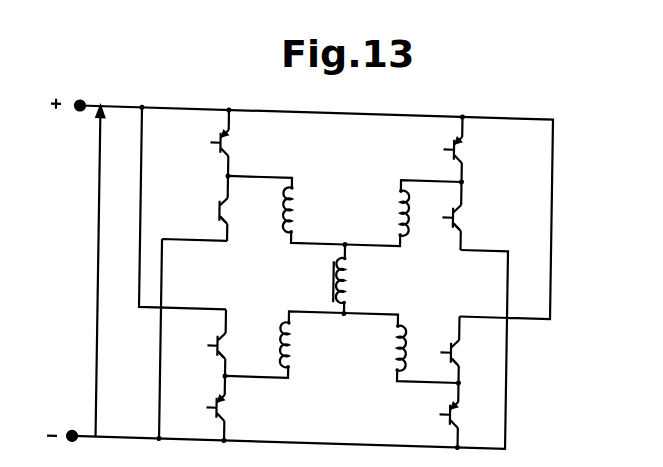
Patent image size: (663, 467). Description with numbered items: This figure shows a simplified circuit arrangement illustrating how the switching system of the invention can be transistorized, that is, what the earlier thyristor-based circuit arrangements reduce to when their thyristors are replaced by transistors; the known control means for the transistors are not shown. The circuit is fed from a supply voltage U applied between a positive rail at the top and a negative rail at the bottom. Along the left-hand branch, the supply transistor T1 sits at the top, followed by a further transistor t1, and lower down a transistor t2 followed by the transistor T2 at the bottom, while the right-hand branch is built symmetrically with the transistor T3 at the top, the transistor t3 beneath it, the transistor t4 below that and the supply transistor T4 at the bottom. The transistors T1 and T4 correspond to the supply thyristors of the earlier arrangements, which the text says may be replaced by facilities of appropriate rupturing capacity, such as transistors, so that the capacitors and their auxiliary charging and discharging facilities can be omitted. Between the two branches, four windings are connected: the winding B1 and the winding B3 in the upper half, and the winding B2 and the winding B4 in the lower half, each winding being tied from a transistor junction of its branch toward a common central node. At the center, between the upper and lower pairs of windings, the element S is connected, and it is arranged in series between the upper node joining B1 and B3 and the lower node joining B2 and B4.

The supply transistor T1 is at (228, 146).
The transistor T2 is at (222, 410).
The transistor T3 is at (463, 145).
The supply transistor T4 is at (461, 408).
The transistor t1 is at (221, 211).
The transistor t2 is at (222, 345).
The transistor t3 is at (463, 215).
The transistor t4 is at (463, 338).
The coil B1 is at (297, 207).
The coil B2 is at (298, 348).
The coil B3 is at (399, 206).
The coil B4 is at (402, 344).
The coil S is at (329, 276).
The supply voltage U is at (90, 271).